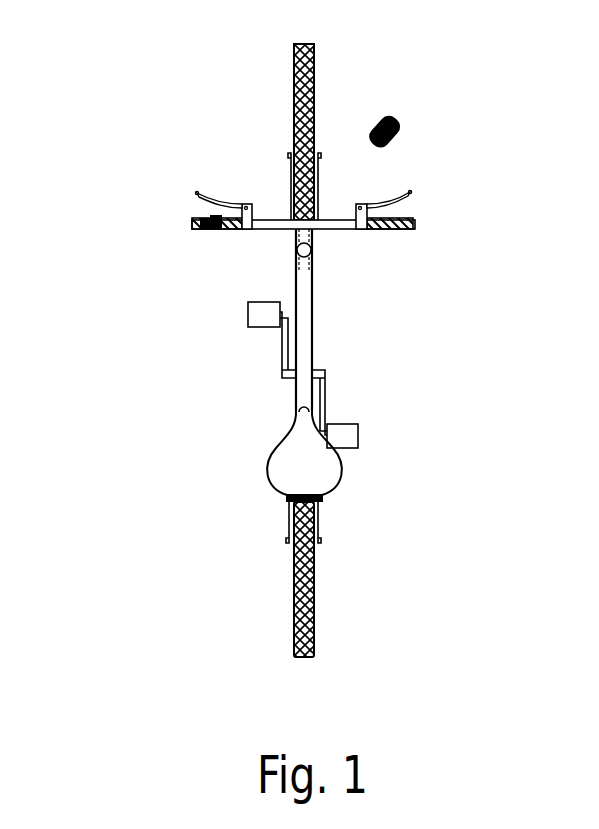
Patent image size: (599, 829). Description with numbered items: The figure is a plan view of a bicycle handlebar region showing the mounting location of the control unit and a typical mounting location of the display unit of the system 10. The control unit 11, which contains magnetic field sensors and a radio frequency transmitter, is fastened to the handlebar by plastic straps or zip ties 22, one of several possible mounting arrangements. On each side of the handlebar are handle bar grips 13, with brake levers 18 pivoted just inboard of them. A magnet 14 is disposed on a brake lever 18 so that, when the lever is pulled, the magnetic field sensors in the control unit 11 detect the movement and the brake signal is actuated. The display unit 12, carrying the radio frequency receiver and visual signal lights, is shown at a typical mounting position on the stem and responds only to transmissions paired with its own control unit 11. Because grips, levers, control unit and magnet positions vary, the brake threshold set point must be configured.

The system 10 is at (393, 113).
The control unit 11 is at (218, 220).
The display unit 12 is at (287, 502).
The handle bar grips 13 is at (380, 232).
The magnet 14 is at (212, 207).
The brake lever 18 is at (237, 203).
The zip ties 22 is at (205, 230).